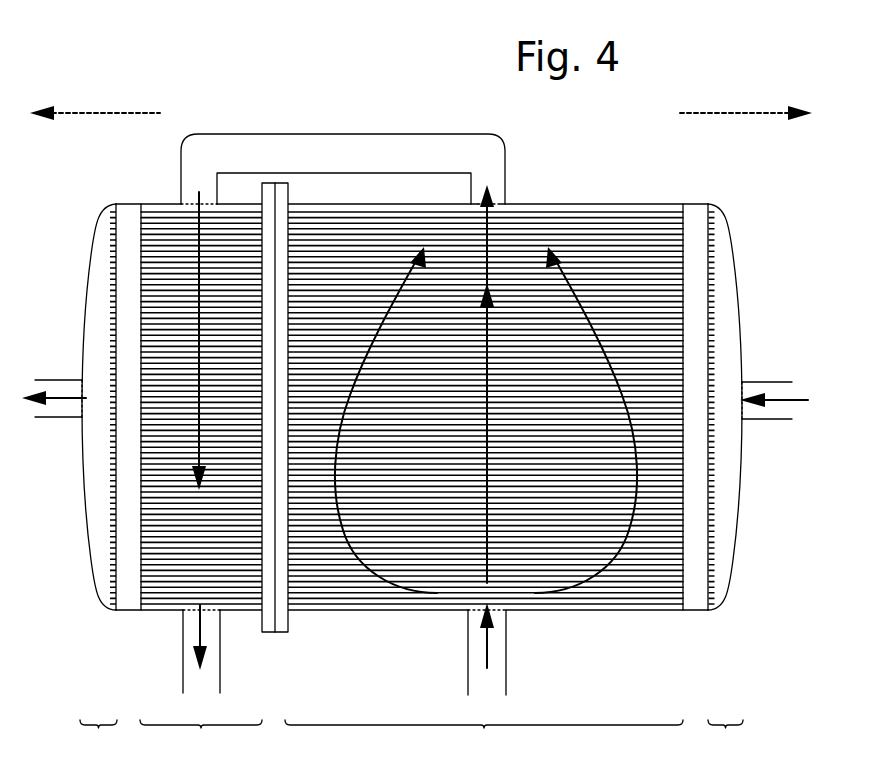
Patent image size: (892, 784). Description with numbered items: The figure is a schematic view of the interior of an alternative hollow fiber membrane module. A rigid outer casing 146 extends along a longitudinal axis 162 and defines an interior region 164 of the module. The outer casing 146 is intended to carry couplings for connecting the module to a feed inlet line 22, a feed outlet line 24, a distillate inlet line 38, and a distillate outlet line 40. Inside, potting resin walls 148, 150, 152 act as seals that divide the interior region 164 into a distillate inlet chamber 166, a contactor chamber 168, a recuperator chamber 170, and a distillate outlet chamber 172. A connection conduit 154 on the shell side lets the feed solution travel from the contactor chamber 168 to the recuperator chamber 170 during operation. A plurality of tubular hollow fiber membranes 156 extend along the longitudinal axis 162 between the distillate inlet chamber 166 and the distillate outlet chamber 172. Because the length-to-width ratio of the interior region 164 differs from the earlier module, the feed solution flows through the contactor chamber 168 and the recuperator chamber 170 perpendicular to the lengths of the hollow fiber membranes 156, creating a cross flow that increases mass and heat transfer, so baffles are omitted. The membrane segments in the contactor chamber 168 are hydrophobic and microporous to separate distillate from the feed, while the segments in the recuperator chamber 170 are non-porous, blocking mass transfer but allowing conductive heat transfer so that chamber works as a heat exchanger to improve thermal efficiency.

The feed inlet line 22 is at (506, 645).
The feed outlet line 24 is at (220, 644).
The distillate inlet line 38 is at (764, 382).
The distillate outlet line 40 is at (65, 380).
The outer casing 146 is at (522, 204).
The potting resin wall 148 is at (130, 602).
The potting resin wall 150 is at (290, 624).
The potting resin wall 152 is at (697, 602).
The connection conduit 154 is at (318, 136).
The hollow fiber membranes 156 is at (655, 607).
The longitudinal axis 162 is at (121, 113).
The interior region 164 is at (638, 228).
The distillate inlet chamber 166 is at (726, 739).
The contactor chamber 168 is at (484, 738).
The recuperator chamber 170 is at (201, 738).
The distillate outlet chamber 172 is at (98, 738).